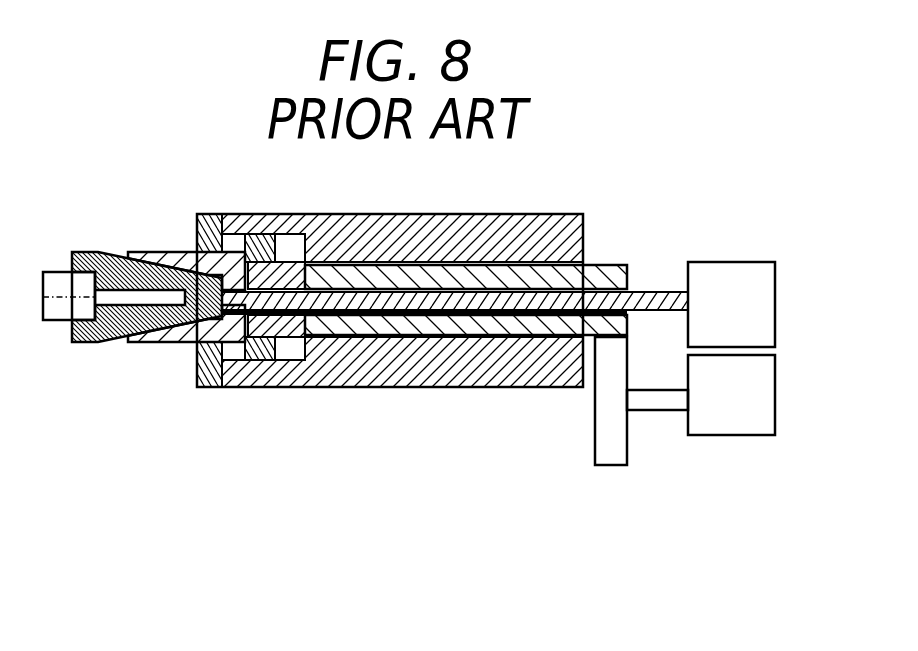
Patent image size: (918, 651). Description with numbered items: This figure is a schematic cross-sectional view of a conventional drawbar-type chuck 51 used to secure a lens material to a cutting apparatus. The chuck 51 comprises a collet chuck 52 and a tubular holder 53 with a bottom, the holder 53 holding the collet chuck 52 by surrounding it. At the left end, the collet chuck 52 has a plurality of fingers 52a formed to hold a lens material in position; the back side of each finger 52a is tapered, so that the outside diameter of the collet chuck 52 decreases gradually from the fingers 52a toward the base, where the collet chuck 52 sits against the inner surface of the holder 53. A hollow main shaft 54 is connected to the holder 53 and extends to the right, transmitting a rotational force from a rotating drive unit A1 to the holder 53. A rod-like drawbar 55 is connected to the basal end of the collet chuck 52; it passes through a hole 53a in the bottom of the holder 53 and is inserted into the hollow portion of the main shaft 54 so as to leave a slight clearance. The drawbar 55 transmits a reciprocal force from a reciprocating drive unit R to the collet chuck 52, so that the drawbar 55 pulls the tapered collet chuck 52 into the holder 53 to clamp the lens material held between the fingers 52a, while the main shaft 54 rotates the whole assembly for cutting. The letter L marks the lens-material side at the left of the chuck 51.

The chuck 51 is at (608, 224).
The collet chuck 52 is at (42, 331).
The finger 52a is at (107, 341).
The tubular holder 53 is at (177, 343).
The hole 53a is at (258, 342).
The hollow main shaft 54 is at (473, 328).
The drawbar 55 is at (398, 306).
The optical fiber L is at (63, 307).
The reciprocating drive unit R is at (748, 278).
The rotating drive unit A1 is at (750, 418).